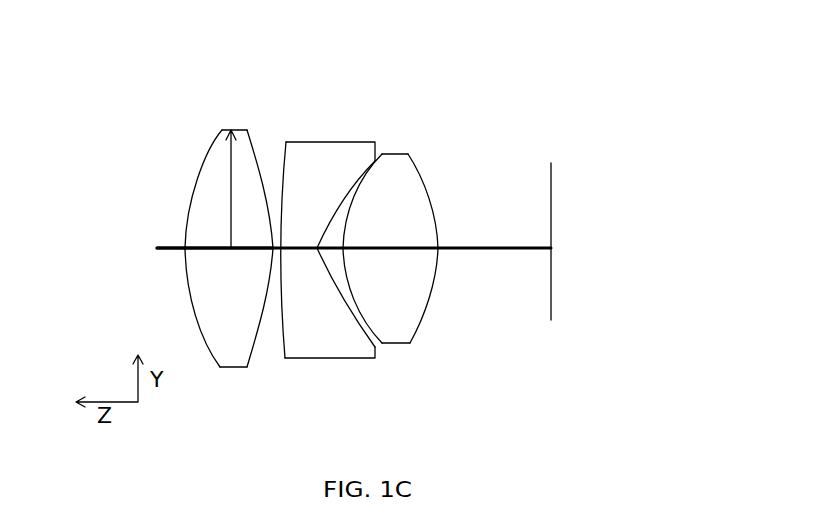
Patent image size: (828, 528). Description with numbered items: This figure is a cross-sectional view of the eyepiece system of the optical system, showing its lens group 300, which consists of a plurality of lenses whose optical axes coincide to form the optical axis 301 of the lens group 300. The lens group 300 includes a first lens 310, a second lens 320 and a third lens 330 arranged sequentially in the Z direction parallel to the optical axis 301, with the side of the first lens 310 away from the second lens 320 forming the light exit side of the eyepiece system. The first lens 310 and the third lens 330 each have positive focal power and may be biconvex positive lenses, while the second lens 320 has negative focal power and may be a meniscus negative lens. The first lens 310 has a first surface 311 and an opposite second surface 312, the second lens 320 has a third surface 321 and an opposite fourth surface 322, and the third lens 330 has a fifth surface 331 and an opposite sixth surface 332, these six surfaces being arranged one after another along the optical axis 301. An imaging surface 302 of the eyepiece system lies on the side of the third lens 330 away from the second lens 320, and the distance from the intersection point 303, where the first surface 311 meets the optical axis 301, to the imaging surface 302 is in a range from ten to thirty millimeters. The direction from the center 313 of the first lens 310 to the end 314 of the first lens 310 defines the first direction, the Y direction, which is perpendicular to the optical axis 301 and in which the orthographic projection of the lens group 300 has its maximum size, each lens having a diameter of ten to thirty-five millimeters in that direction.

The lens group 300 is at (304, 239).
The optical axis 301 is at (497, 248).
The imaging surface 302 is at (551, 212).
The intersection point 303 is at (185, 245).
The first lens 310 is at (179, 239).
The first surface 311 is at (197, 312).
The second surface 312 is at (258, 323).
The center of the first lens 313 is at (222, 252).
The end of the first lens 314 is at (229, 130).
The second lens 320 is at (333, 239).
The third surface 321 is at (285, 358).
The fourth surface 322 is at (347, 308).
The third lens 330 is at (433, 239).
The fifth surface 331 is at (343, 233).
The sixth surface 332 is at (430, 293).